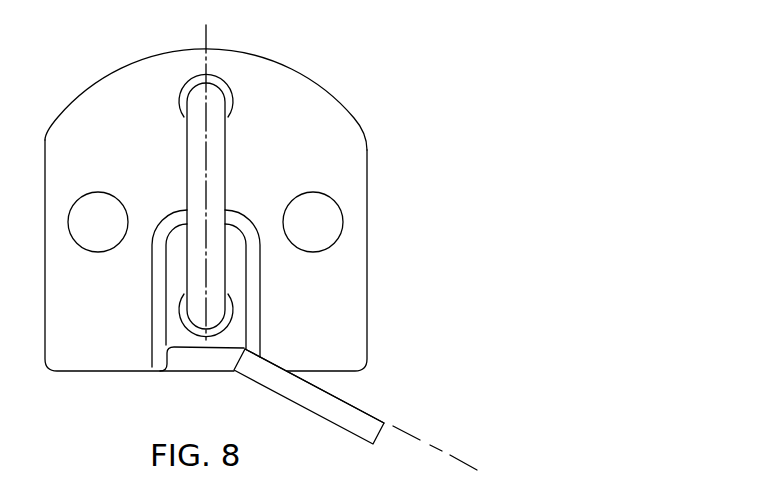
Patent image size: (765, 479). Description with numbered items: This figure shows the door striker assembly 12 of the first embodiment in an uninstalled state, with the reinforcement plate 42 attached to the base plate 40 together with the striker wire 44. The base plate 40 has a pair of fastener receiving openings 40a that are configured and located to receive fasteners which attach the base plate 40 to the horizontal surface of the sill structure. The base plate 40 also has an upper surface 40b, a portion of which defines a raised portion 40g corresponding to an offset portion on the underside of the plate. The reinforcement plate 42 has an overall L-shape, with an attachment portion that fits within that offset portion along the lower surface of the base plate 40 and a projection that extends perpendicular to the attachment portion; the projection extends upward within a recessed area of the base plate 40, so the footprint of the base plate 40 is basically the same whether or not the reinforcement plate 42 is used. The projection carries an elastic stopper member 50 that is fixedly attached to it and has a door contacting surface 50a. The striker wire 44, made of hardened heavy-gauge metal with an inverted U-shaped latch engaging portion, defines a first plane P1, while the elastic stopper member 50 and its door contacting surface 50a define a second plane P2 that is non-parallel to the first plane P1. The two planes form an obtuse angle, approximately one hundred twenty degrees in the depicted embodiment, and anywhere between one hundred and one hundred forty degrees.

The door striker assembly 12 is at (400, 105).
The base plate 40 is at (282, 100).
The fastener receiving openings 40a is at (128, 228).
The upper surface 40b is at (112, 122).
The raised portion 40g is at (177, 285).
The reinforcement plate 42 is at (193, 357).
The striker wire 44 is at (213, 150).
The elastic stopper member 50 is at (345, 398).
The door contacting surface 50a is at (367, 412).
The first plane P1 is at (205, 33).
The second plane P2 is at (460, 461).